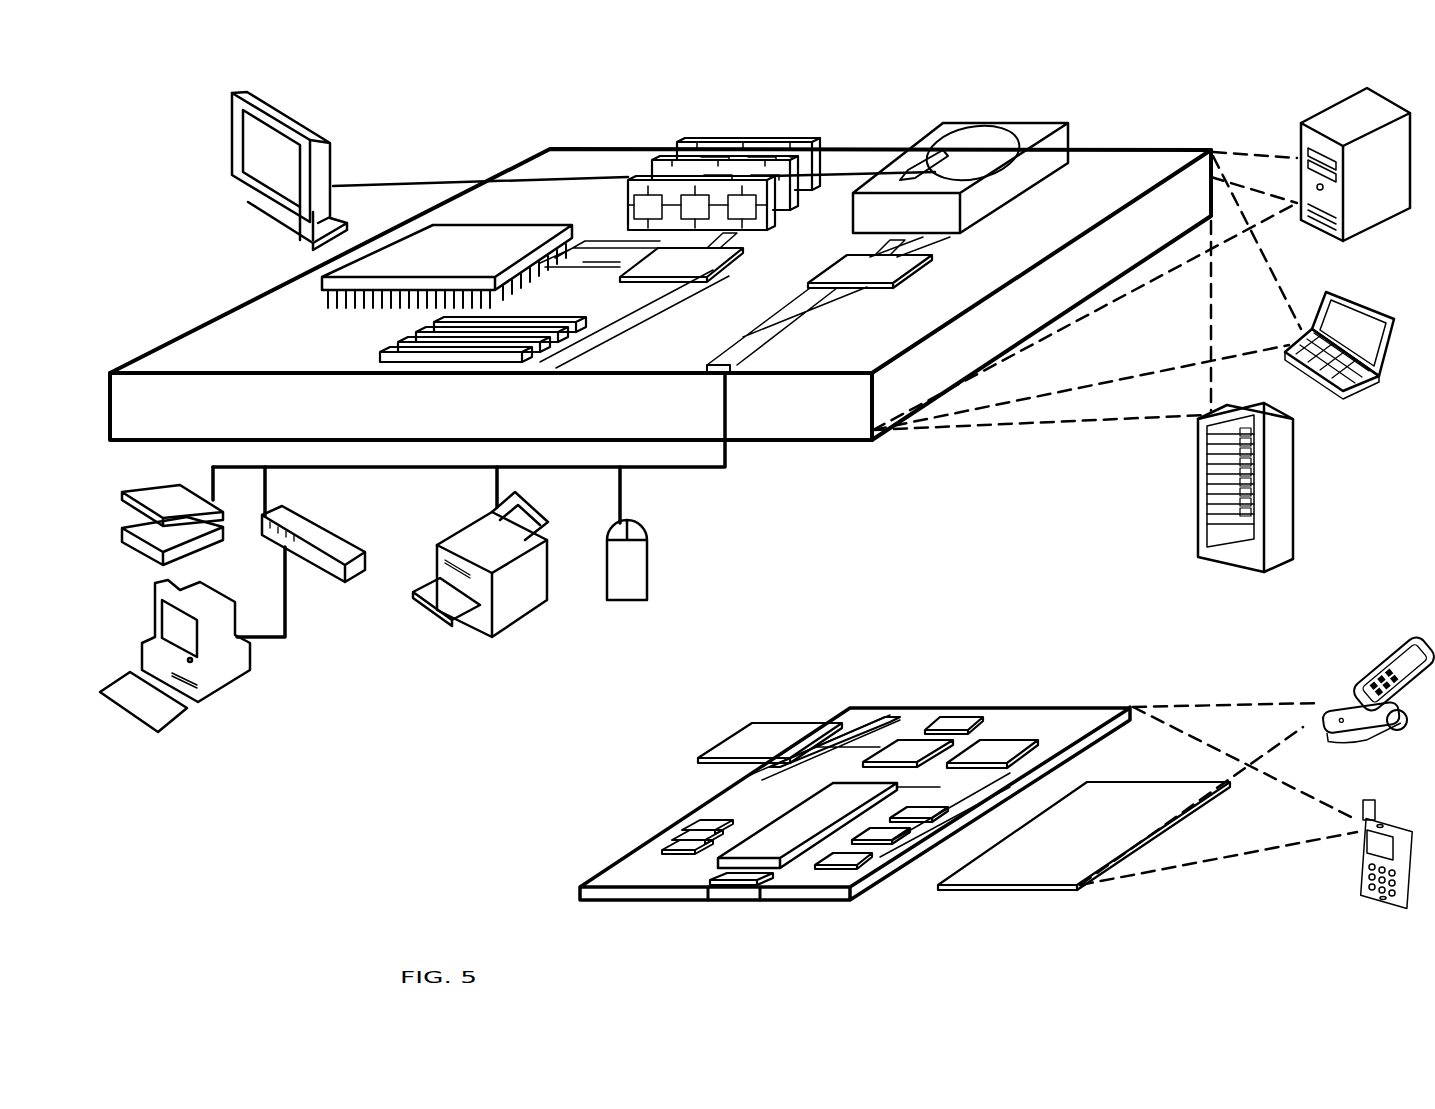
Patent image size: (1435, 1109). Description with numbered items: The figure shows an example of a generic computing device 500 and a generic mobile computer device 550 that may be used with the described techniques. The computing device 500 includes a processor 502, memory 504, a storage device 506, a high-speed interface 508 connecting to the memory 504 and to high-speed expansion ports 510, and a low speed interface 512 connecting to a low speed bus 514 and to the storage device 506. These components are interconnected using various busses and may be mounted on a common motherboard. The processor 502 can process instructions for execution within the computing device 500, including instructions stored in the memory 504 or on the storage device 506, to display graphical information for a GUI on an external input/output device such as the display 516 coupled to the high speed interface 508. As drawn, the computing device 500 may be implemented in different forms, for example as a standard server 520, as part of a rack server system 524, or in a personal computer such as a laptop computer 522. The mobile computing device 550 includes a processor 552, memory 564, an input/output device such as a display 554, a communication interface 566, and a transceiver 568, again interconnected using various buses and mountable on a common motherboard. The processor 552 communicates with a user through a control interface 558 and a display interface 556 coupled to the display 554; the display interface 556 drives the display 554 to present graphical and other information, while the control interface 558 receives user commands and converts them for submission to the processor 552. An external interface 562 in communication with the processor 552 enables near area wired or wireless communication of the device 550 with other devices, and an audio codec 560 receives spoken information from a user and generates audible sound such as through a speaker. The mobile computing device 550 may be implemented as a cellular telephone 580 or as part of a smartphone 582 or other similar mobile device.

The computing device 500 is at (464, 114).
The processor 502 is at (322, 288).
The memory 504 is at (700, 138).
The storage device 506 is at (955, 127).
The high-speed interface 508 is at (658, 262).
The high-speed expansion ports 510 is at (407, 337).
The low speed interface 512 is at (870, 267).
The low speed bus 514 is at (737, 373).
The display 516 is at (237, 102).
The standard server 520 is at (1293, 131).
The laptop computer 522 is at (1328, 286).
The rack server system 524 is at (1198, 514).
The mobile computer device 550 is at (829, 678).
The processor 552 is at (778, 868).
The display 554 is at (1082, 890).
The display interface 556 is at (860, 873).
The control interface 558 is at (903, 843).
The audio codec 560 is at (957, 717).
The external interface 562 is at (827, 720).
The memory 564 is at (750, 722).
The communication interface 566 is at (910, 752).
The transceiver 568 is at (995, 748).
The cellular telephone 580 is at (1380, 643).
The smartphone 582 is at (1365, 800).